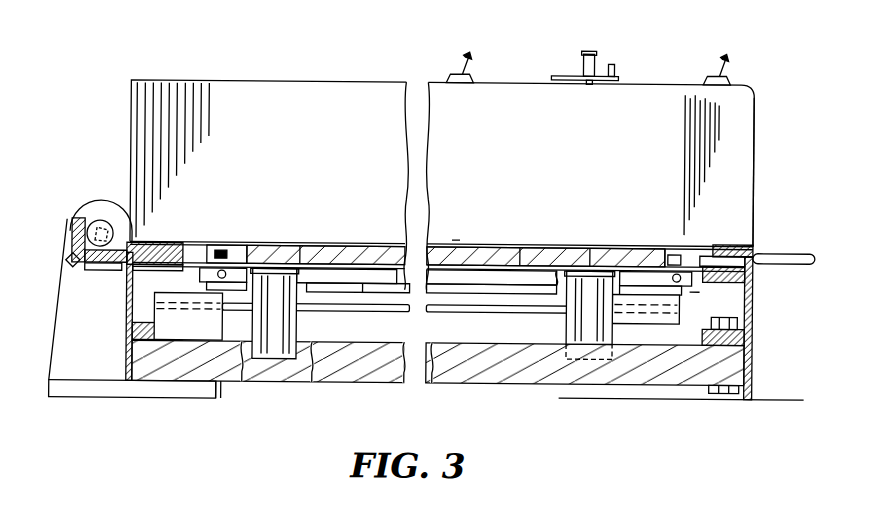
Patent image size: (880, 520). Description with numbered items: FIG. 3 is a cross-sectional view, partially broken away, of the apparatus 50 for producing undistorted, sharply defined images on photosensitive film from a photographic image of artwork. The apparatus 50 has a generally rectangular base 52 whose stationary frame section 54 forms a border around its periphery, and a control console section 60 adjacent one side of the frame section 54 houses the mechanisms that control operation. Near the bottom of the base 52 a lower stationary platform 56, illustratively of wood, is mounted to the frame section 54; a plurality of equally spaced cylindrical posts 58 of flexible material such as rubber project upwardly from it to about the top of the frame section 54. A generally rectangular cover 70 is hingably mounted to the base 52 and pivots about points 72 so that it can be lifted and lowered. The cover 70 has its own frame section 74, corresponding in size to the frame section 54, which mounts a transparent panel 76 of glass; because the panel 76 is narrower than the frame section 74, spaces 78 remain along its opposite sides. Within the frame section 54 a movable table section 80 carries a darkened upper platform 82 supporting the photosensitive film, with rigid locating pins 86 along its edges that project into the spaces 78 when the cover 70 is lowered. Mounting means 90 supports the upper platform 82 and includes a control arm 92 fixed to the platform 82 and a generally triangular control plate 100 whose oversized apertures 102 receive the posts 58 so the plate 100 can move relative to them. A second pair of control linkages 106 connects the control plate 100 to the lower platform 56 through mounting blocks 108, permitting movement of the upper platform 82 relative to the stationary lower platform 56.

The apparatus 50 is at (244, 68).
The base 52 is at (130, 330).
The stationary frame section 54 is at (753, 359).
The lower stationary platform 56 is at (475, 380).
The posts 58 is at (277, 352).
The control console section 60 is at (745, 155).
The cover 70 is at (767, 247).
The pivot points 72 is at (97, 224).
The frame section of the cover 74 is at (745, 239).
The transparent panel 76 is at (550, 257).
The spaces 78 is at (208, 252).
The movable table section 80 is at (456, 241).
The upper platform 82 is at (485, 268).
The locating pins 86 is at (228, 252).
The mounting means 90 is at (730, 295).
The control arm 92 is at (193, 273).
The control plate 100 is at (364, 285).
The apertures 102 is at (310, 240).
The second pair of control linkages 106 is at (368, 314).
The mounting blocks 108 is at (205, 334).